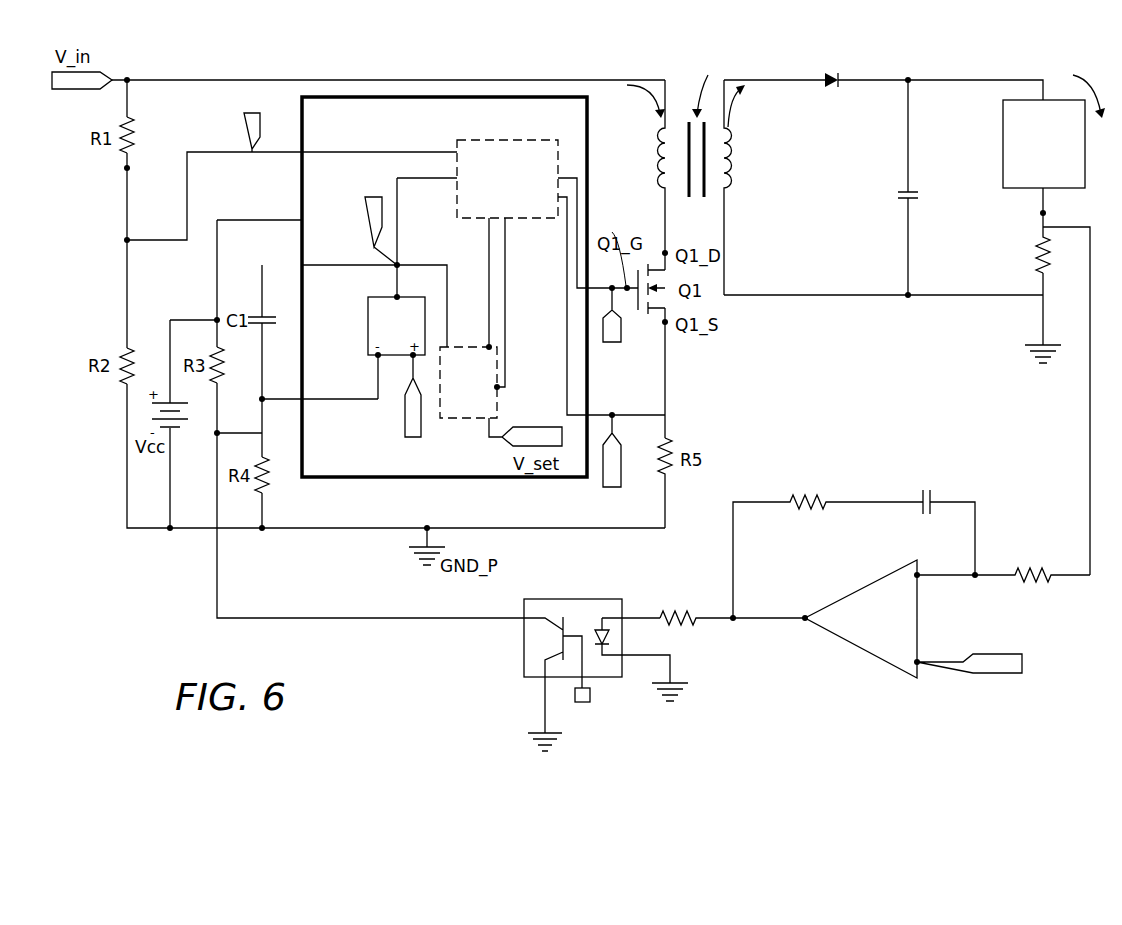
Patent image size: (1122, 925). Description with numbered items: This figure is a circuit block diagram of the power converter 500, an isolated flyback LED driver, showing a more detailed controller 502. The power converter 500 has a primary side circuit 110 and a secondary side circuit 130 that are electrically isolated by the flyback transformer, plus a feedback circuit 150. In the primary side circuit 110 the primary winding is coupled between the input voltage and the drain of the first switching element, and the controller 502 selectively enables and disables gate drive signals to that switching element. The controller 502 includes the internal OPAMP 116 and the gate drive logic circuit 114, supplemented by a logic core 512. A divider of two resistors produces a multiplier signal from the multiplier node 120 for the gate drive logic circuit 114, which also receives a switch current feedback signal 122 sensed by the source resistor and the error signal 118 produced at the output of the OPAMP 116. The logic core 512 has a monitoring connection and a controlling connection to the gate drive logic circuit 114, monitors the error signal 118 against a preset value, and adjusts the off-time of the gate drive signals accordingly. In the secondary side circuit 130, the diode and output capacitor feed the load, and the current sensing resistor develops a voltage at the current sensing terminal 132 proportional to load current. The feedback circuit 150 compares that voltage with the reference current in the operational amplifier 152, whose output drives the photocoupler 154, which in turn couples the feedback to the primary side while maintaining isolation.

The primary side circuit 110 is at (352, 69).
The power converter 500 is at (659, 50).
The controller 502 is at (478, 96).
The secondary side circuit 130 is at (890, 63).
The multiplier node 120 is at (124, 240).
The error signal 118 is at (373, 196).
The gate drive logic circuit 114 is at (520, 191).
The gate drive OPAMP 116 is at (408, 331).
The logic core 512 is at (479, 394).
The switch current feedback signal 122 is at (609, 487).
The current sensing terminal 132 is at (1045, 212).
The photocoupler 154 is at (590, 654).
The operational amplifier 152 is at (889, 629).
The feedback circuit 150 is at (837, 721).